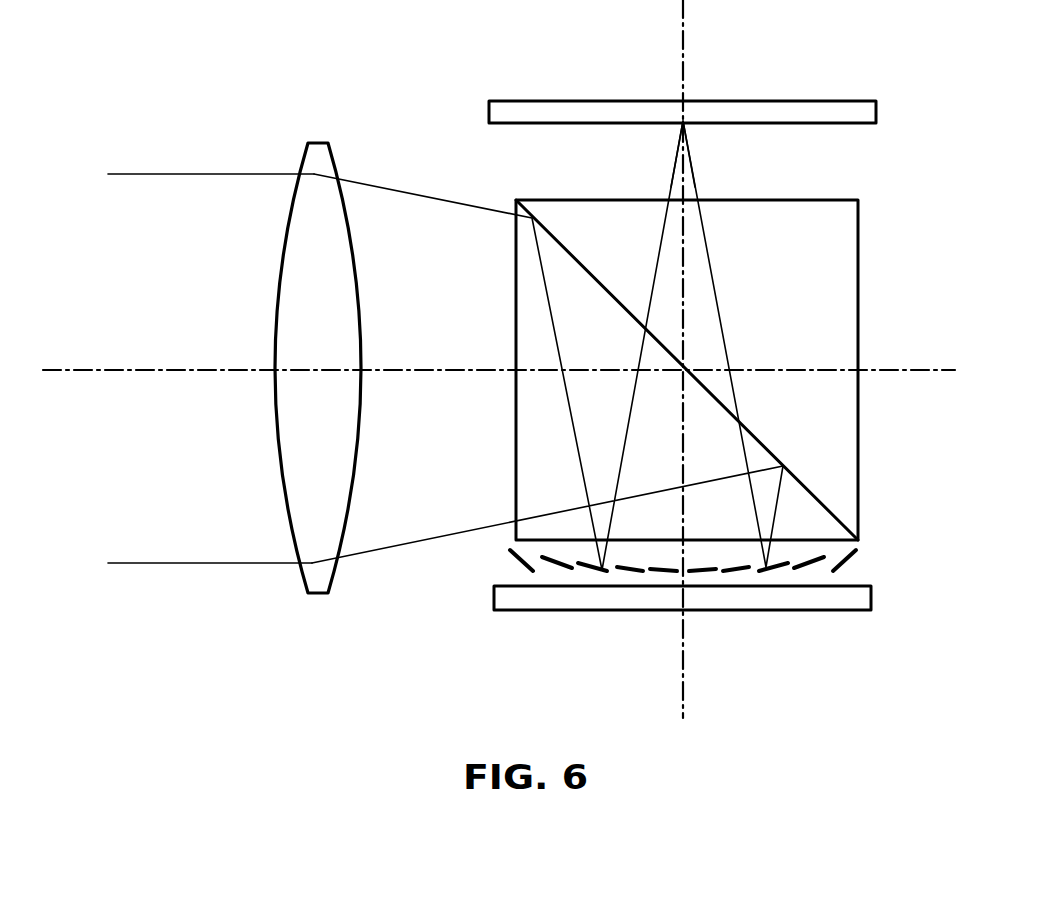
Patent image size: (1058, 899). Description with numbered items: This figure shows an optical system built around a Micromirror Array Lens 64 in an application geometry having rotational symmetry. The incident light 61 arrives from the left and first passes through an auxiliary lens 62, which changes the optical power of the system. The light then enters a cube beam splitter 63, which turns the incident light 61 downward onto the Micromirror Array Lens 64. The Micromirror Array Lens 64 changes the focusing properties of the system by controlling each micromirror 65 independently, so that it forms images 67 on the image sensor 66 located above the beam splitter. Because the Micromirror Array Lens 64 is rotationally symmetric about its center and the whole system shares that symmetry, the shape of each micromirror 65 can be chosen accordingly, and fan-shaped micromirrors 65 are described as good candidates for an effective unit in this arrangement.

The incident light 61 is at (196, 180).
The auxiliary lens 62 is at (285, 423).
The cube beam splitter 63 is at (830, 257).
The Micromirror Array Lens 64 is at (620, 602).
The micromirror 65 is at (812, 562).
The image sensor 66 is at (753, 110).
The image 67 is at (683, 121).